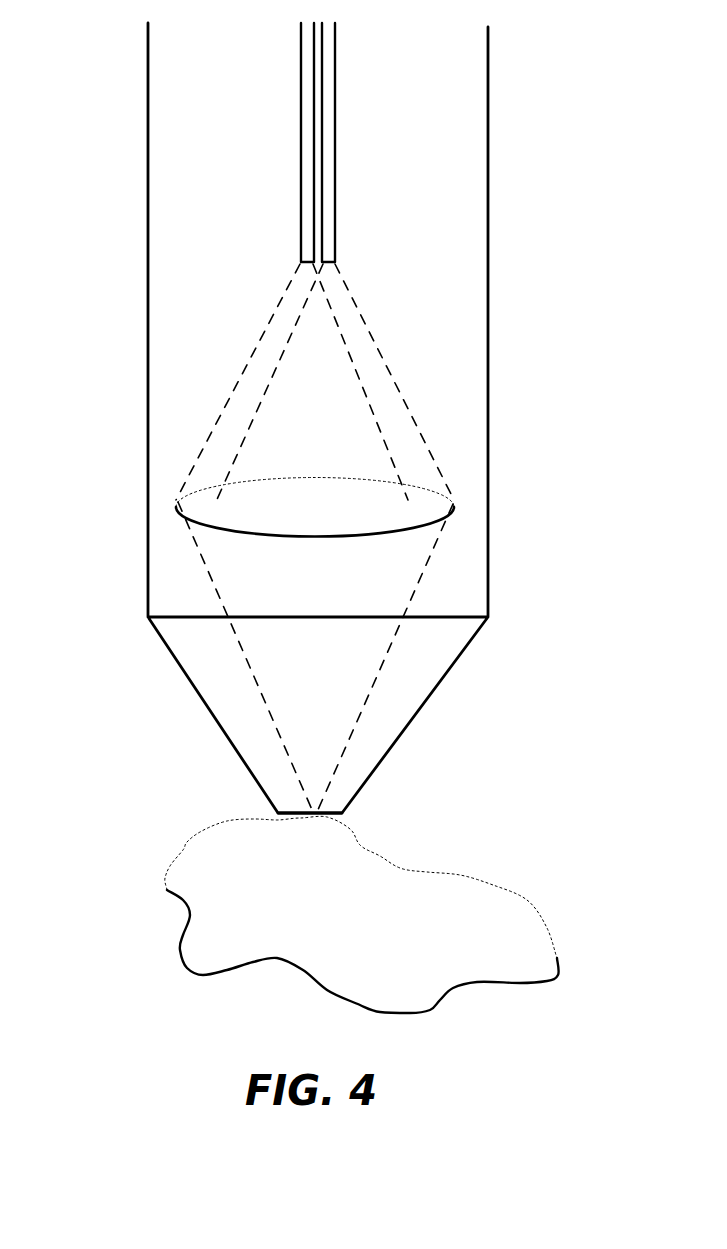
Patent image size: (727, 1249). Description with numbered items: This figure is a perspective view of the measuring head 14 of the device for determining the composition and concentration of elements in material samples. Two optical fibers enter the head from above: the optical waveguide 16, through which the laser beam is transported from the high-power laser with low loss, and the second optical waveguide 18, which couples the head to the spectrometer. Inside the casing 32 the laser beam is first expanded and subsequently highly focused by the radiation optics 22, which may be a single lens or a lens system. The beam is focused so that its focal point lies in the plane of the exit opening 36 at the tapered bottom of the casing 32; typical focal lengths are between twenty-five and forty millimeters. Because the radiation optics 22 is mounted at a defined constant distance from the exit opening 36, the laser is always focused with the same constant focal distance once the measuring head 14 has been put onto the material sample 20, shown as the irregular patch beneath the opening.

The measuring head 14 is at (320, 418).
The optical waveguide 16 is at (337, 141).
The second optical waveguide 18 is at (299, 140).
The material sample 20 is at (170, 870).
The radiation optics 22 is at (243, 536).
The casing 32 is at (146, 466).
The exit opening 36 is at (262, 813).